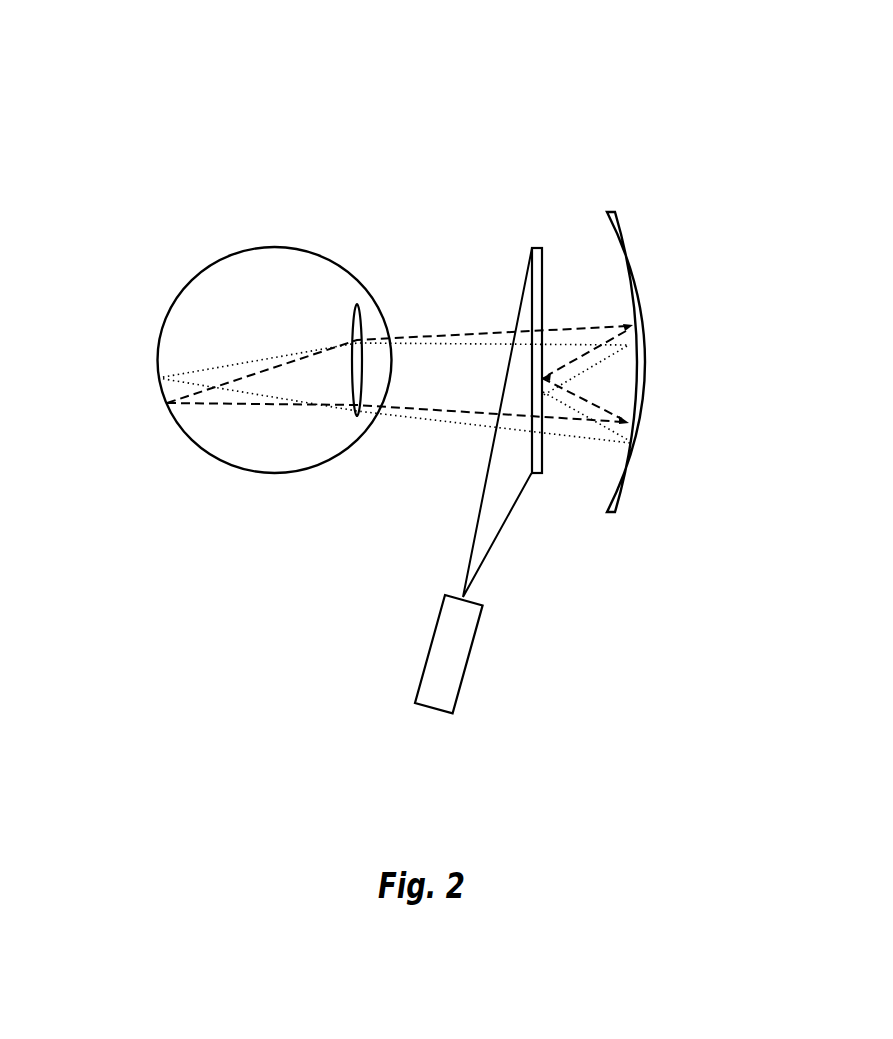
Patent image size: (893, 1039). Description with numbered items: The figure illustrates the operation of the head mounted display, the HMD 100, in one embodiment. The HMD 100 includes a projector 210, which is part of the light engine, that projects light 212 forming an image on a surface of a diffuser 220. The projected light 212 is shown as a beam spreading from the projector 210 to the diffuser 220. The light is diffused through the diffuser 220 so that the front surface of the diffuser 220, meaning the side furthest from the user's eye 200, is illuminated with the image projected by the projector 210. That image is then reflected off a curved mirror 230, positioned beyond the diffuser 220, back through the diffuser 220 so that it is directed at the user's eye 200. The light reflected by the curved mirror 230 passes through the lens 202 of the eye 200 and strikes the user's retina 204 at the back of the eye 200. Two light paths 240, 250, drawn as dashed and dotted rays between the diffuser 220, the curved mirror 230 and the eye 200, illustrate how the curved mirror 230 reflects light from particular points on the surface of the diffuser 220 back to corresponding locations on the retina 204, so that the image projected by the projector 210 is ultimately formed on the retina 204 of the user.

The HMD 100 is at (709, 62).
The user's eye 200 is at (273, 247).
The lens of the eye 202 is at (363, 320).
The retina 204 is at (155, 368).
The projector 210 is at (473, 647).
The light 212 is at (470, 545).
The diffuser 220 is at (543, 455).
The curved mirror 230 is at (625, 490).
The light path 240 is at (625, 430).
The light path 250 is at (627, 328).